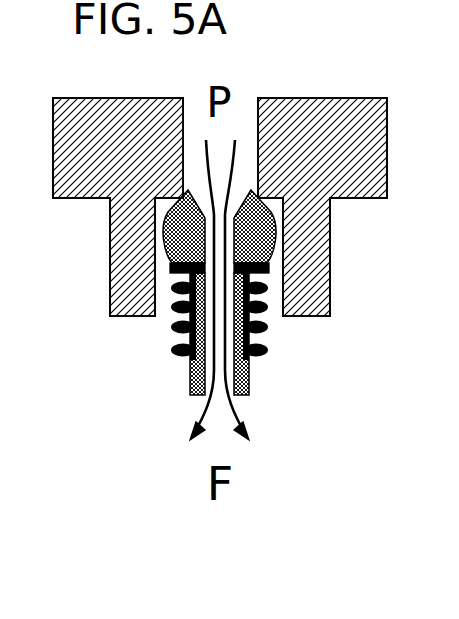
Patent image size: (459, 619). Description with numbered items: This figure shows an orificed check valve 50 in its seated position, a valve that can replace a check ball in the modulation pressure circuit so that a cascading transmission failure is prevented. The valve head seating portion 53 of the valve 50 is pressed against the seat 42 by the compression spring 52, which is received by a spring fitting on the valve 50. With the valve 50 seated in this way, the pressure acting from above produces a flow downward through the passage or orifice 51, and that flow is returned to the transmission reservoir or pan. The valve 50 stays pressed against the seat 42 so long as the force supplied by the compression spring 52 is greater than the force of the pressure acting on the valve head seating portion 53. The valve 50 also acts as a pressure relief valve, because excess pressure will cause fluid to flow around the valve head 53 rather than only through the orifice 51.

The seat 42 is at (164, 187).
The orificed check valve 50 is at (155, 383).
The passage or orifice 51 is at (232, 355).
The compression spring 52 is at (175, 333).
The valve head seating portion 53 is at (254, 213).